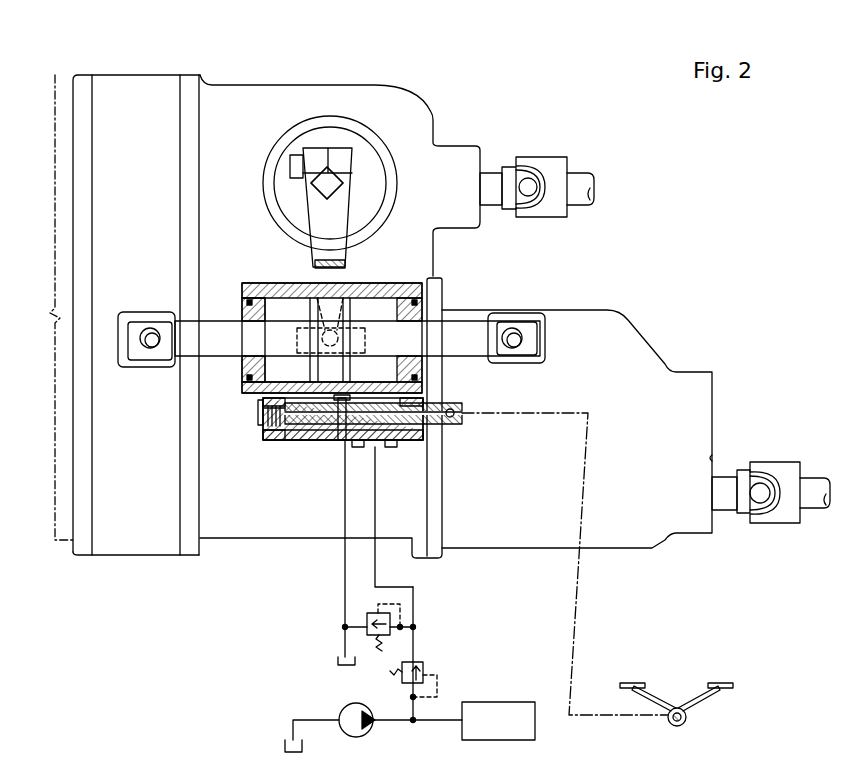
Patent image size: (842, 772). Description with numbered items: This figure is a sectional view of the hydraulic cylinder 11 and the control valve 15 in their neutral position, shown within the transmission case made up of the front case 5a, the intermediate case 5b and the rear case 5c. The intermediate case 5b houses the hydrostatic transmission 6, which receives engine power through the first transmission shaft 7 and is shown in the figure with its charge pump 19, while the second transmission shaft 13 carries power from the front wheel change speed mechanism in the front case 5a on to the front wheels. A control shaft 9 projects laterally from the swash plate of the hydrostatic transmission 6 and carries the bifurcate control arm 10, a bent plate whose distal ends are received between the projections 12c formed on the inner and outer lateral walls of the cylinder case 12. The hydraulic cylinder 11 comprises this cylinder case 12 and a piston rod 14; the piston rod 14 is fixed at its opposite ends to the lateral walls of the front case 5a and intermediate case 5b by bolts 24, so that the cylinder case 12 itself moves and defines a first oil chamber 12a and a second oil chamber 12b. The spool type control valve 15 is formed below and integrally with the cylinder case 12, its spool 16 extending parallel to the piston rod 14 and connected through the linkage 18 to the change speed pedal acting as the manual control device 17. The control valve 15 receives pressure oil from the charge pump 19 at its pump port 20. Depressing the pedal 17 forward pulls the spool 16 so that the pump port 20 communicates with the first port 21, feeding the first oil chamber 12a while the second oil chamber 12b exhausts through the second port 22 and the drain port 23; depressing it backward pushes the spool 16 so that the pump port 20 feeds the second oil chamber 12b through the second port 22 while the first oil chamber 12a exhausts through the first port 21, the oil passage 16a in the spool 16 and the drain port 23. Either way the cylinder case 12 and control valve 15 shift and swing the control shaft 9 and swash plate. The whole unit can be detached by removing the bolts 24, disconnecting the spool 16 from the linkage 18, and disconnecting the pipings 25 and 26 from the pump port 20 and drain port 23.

The front case 5a is at (622, 318).
The intermediate case 5b is at (432, 103).
The rear case 5c is at (75, 557).
The hydrostatic transmission 6 is at (519, 702).
The first transmission shaft 7 is at (589, 172).
The control shaft 9 is at (333, 199).
The control arm 10 is at (345, 193).
The hydraulic cylinder 11 is at (229, 297).
The cylinder case 12 is at (292, 296).
The first oil chamber 12a is at (396, 292).
The second oil chamber 12b is at (270, 292).
The projections 12c is at (346, 290).
The second transmission shaft 13 is at (810, 510).
The piston rod 14 is at (470, 310).
The control valve 15 is at (278, 452).
The spool 16 is at (460, 430).
The oil passage 16a is at (452, 403).
The manual control device 17 is at (706, 702).
The linkage 18 is at (582, 594).
The charge pump 19 is at (345, 706).
The pump port 20 is at (379, 460).
The first port 21 is at (398, 385).
The second port 22 is at (267, 385).
The drain port 23 is at (334, 445).
The bolts 24 is at (150, 345).
The piping 25 is at (413, 597).
The piping 26 is at (345, 570).